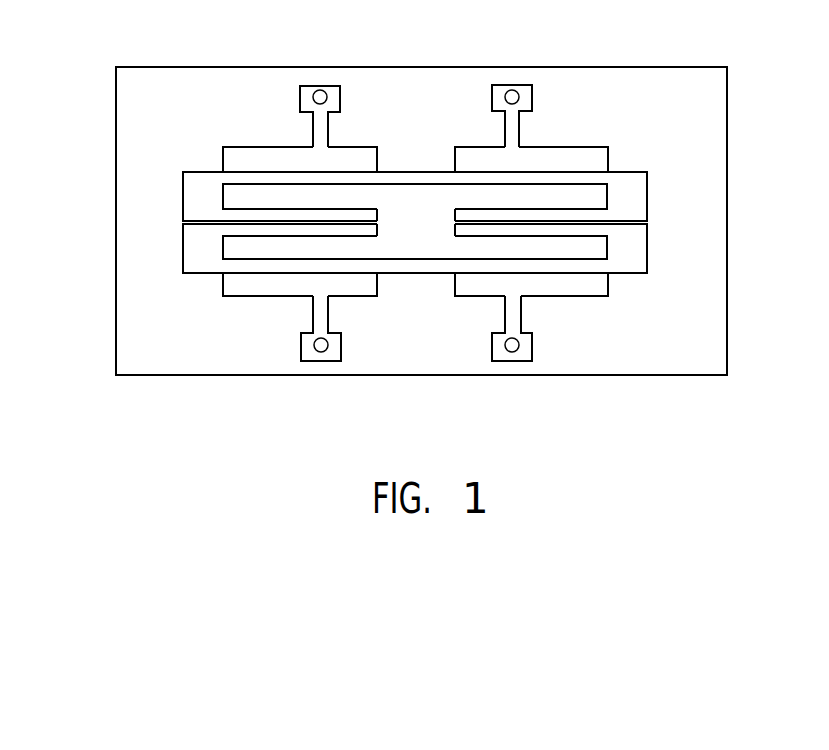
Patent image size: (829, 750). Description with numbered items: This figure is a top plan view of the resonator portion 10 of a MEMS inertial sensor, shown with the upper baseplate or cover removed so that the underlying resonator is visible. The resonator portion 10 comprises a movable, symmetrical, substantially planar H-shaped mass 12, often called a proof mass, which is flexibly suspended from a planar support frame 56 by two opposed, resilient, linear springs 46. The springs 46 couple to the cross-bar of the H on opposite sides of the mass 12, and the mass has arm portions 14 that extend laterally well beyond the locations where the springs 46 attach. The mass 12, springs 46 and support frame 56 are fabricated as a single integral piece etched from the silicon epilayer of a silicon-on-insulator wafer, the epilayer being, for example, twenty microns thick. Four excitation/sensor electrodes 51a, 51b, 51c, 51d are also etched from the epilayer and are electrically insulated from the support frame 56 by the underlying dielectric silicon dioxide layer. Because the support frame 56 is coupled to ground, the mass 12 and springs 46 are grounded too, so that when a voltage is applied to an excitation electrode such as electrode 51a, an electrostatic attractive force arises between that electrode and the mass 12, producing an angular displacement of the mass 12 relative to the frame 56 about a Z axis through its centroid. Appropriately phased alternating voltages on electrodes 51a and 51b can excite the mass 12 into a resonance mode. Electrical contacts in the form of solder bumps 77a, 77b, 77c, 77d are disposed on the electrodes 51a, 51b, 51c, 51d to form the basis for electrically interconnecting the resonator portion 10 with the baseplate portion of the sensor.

The resonator portion 10 is at (386, 226).
The movable symmetrical planar mass 12 is at (420, 195).
The arm portions 14 is at (592, 190).
The springs 46 is at (557, 224).
The planar support frame 56 is at (687, 358).
The excitation/sensor electrode 51a is at (273, 157).
The excitation/sensor electrode 51b is at (557, 157).
The excitation/sensor electrode 51c is at (362, 288).
The excitation/sensor electrode 51d is at (552, 288).
The solder bump 77a is at (321, 90).
The solder bump 77b is at (512, 90).
The solder bump 77c is at (321, 352).
The solder bump 77d is at (512, 352).